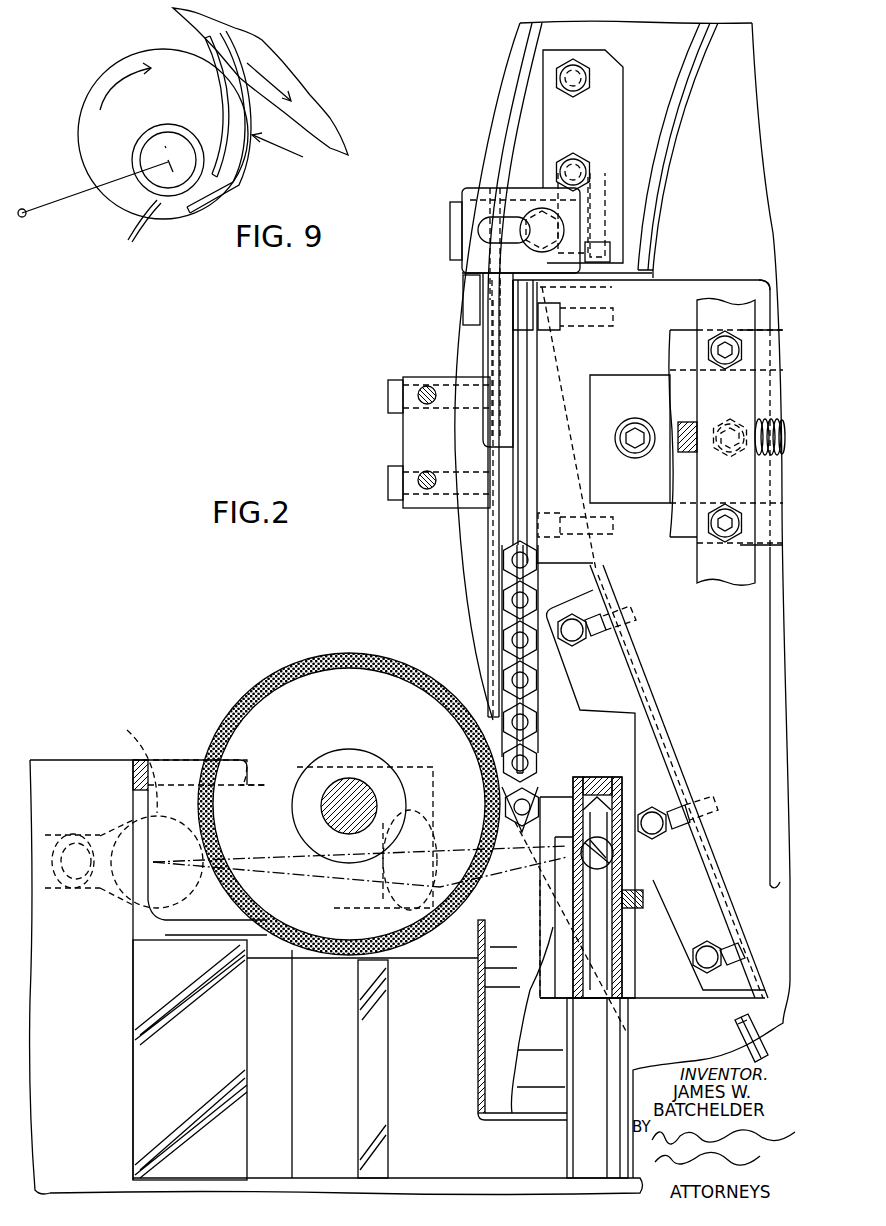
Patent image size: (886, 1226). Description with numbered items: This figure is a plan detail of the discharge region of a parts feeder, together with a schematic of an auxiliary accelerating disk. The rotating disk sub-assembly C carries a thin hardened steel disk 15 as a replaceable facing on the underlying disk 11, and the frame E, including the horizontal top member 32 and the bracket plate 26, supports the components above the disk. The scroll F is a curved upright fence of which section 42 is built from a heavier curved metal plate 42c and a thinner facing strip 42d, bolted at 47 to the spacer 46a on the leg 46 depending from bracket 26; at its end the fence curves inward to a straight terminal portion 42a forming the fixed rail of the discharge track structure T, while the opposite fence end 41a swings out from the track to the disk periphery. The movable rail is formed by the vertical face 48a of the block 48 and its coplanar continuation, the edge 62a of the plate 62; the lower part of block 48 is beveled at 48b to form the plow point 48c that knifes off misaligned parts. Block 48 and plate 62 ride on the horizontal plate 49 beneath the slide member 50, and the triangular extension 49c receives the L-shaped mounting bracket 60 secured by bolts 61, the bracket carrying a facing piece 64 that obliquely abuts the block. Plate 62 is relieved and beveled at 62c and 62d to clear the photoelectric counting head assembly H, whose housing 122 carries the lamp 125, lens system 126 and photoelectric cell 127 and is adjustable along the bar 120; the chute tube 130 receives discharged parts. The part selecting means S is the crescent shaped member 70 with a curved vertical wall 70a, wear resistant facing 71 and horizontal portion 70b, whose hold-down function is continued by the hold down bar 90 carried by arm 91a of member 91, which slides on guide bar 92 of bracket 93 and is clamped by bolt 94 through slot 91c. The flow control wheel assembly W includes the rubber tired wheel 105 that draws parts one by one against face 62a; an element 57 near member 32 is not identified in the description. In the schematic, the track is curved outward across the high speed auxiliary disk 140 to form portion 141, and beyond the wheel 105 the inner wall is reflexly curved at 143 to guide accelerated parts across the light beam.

In FIG. 9, the disk 11 is at (180, 23).
In FIG. 2, the disk 11 is at (480, 137).
In FIG. 2, the thin hardened steel disk 15 is at (754, 40).
In FIG. 2, the bracket plate 26 is at (688, 540).
In FIG. 2, the horizontal top member 32 is at (726, 300).
In FIG. 2, the fence portion 41a is at (770, 1022).
In FIG. 2, the scroll section 42 is at (522, 40).
In FIG. 2, the terminal portion of the fence 42a is at (490, 568).
In FIG. 2, the curved metal plate 42c is at (532, 62).
In FIG. 2, the facing strip 42d is at (498, 545).
In FIG. 2, the leg 46 is at (405, 441).
In FIG. 2, the spacer 46a is at (455, 380).
In FIG. 2, the bolt 47 is at (386, 392).
In FIG. 2, the vertical block 48 is at (548, 382).
In FIG. 2, the vertical face 48a is at (537, 478).
In FIG. 2, the beveled vertical face 48b is at (556, 358).
In FIG. 2, the plow point 48c is at (600, 288).
In FIG. 2, the horizontal plate 49 is at (673, 280).
In FIG. 2, the triangular extension 49c is at (600, 585).
In FIG. 2, the slide member 50 is at (652, 500).
In FIG. 2, the spring 57 is at (758, 456).
In FIG. 2, the L-shaped mounting bracket 60 is at (632, 678).
In FIG. 2, the bolts 61 is at (596, 628).
In FIG. 2, the plate 62 is at (545, 648).
In FIG. 2, the vertical face 62a is at (538, 583).
In FIG. 2, the relieved portion 62c is at (548, 797).
In FIG. 2, the beveled portion 62d is at (560, 840).
In FIG. 2, the facing piece 64 is at (736, 980).
In FIG. 2, the crescent shaped member 70 is at (645, 125).
In FIG. 2, the curved vertical wall 70a is at (700, 48).
In FIG. 2, the horizontal projecting portion 70b is at (645, 172).
In FIG. 2, the wear resistant facing 71 is at (703, 44).
In FIG. 2, the hold down bar 90 is at (512, 515).
In FIG. 2, the member 91 is at (460, 190).
In FIG. 2, the arm 91a is at (483, 332).
In FIG. 2, the slot 91c is at (485, 232).
In FIG. 2, the guide bar 92 is at (615, 200).
In FIG. 2, the bracket 93 is at (613, 108).
In FIG. 2, the clamping bolt 94 is at (537, 220).
In FIG. 9, the rubber tired wheel 105 is at (133, 147).
In FIG. 2, the rubber tired wheel 105 is at (363, 652).
In FIG. 2, the bar 120 is at (385, 1062).
In FIG. 2, the housing 122 is at (63, 760).
In FIG. 2, the lamp 125 is at (177, 948).
In FIG. 2, the lens system 126 is at (430, 765).
In FIG. 2, the photoelectric cell 127 is at (606, 860).
In FIG. 2, the chute tube 130 is at (485, 1005).
In FIG. 9, the auxiliary disk 140 is at (103, 76).
In FIG. 9, the track portion 141 is at (233, 181).
In FIG. 9, the reflexly curved inner wall 143 is at (133, 223).
In FIG. 2, the rotating disk sub-assembly C is at (770, 113).
In FIG. 2, the frame E is at (748, 592).
In FIG. 2, the scroll F is at (503, 98).
In FIG. 2, the photoelectric counting head assembly H is at (627, 778).
In FIG. 2, the part selecting means S is at (700, 92).
In FIG. 9, the discharge track structure T is at (260, 92).
In FIG. 2, the discharge track structure T is at (500, 602).
In FIG. 2, the flow control wheel assembly W is at (278, 665).